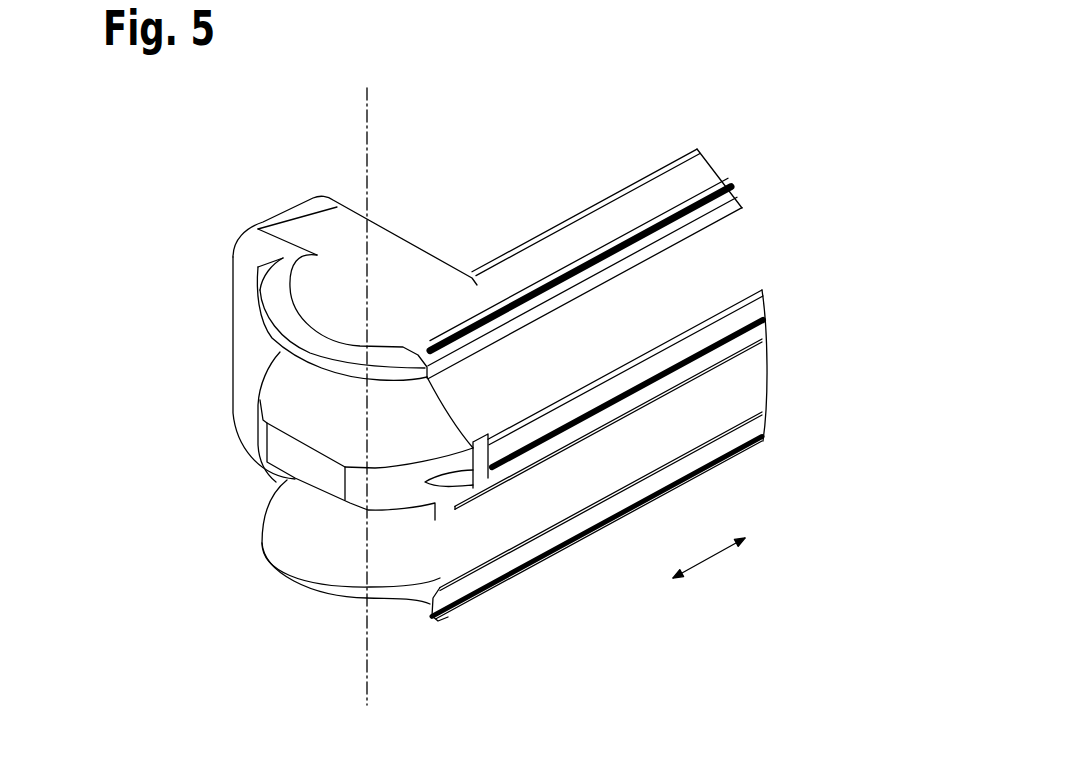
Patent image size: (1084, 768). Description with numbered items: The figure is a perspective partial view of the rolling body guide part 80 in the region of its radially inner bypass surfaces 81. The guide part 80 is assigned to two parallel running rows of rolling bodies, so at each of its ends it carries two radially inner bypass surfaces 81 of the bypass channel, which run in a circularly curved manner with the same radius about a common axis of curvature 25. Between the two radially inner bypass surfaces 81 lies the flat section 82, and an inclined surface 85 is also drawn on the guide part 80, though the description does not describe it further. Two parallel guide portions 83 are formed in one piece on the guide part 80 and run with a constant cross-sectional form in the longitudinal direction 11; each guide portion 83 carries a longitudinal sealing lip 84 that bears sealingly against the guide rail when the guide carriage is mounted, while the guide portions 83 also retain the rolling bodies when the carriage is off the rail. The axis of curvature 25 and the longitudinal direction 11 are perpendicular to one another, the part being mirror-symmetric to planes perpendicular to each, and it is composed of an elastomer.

The longitudinal direction 11 is at (705, 557).
The axis of curvature 25 is at (365, 122).
The rolling body guide part 80 is at (727, 115).
The radially inner bypass surface 81 is at (315, 413).
The flat section 82 is at (287, 450).
The guide portion 83 is at (690, 178).
The longitudinal sealing lip 84 is at (582, 268).
The inclined surface 85 is at (420, 250).